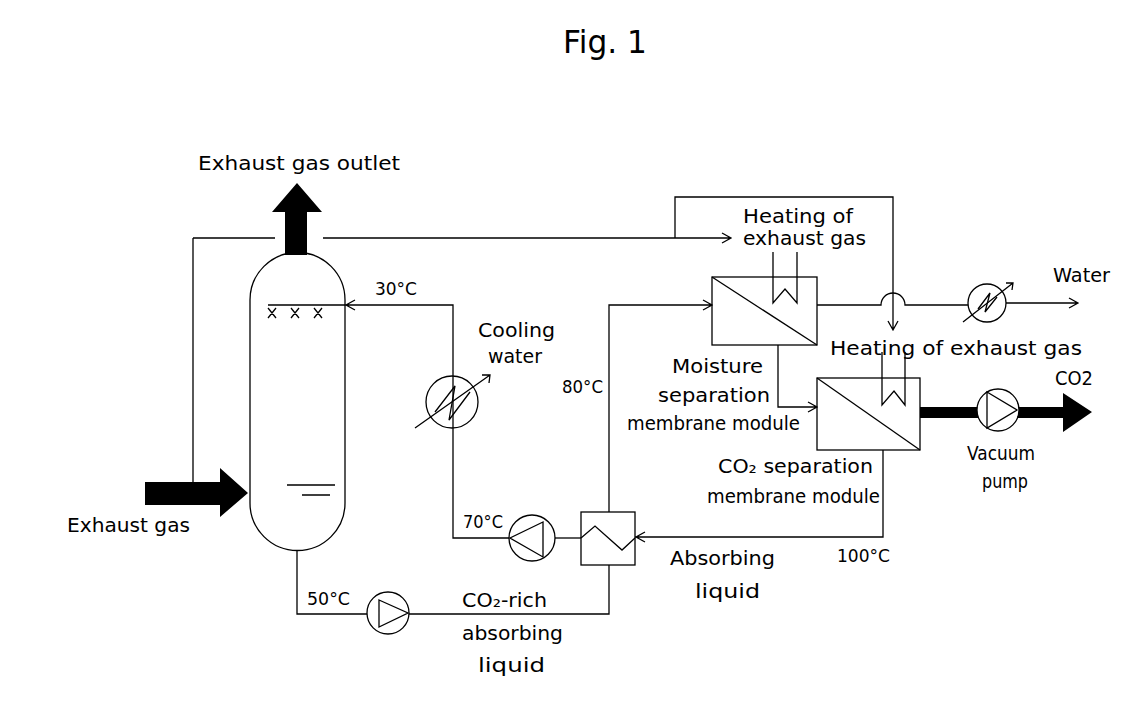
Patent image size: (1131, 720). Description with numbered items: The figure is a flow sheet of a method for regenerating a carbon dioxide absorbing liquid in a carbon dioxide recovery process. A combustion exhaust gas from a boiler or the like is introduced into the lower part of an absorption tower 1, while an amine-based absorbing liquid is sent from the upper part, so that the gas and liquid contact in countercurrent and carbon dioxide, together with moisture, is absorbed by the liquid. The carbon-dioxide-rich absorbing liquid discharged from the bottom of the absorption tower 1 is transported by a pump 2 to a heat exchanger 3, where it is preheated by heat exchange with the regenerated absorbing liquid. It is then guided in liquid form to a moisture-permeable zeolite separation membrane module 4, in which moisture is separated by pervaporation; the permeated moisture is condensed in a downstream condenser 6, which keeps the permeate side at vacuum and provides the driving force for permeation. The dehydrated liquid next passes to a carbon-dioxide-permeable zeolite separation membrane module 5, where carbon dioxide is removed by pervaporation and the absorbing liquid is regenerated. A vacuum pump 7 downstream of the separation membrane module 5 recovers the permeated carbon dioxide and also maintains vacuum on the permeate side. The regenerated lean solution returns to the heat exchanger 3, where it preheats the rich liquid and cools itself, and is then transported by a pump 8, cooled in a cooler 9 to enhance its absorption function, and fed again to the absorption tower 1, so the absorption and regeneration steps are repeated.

The absorption tower 1 is at (262, 540).
The pump 2 is at (396, 630).
The heat exchanger 3 is at (630, 512).
The membrane separation apparatus equipped with a zeolite membrane for moisture sepa 4 is at (712, 290).
The membrane separation apparatus equipped with a zeolite membrane for carbon dioxid 5 is at (912, 450).
The condenser 6 is at (987, 283).
The vacuum pump 7 is at (1015, 420).
The pump 8 is at (530, 515).
The cooler 9 is at (435, 380).